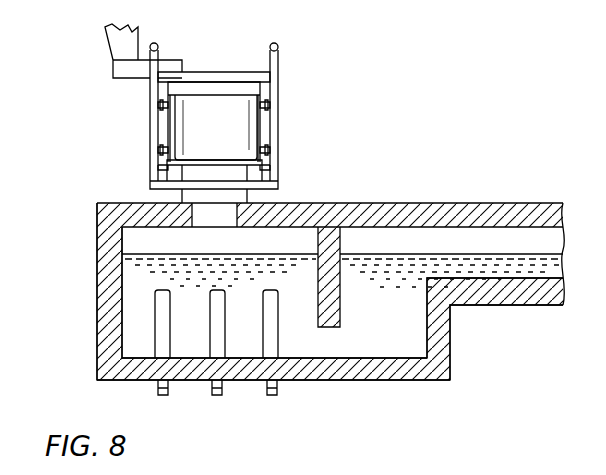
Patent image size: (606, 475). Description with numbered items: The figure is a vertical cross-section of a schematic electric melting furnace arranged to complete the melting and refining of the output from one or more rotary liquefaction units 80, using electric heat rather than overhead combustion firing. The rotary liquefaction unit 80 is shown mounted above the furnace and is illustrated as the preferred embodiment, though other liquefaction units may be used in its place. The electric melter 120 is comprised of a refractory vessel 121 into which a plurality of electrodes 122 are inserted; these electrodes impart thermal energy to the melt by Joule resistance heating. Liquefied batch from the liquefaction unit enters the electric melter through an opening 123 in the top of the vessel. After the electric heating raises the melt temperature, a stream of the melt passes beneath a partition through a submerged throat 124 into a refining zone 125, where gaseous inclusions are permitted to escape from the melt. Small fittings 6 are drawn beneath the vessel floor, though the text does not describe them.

The rotary liquefaction unit 80 is at (139, 127).
The electric melter 120 is at (419, 194).
The refractory vessel 121 is at (98, 290).
The electrodes 122 is at (155, 332).
The opening 123 is at (215, 218).
The submerged throat 124 is at (330, 342).
The refining zone 125 is at (405, 335).
The drain valves 6 is at (157, 394).